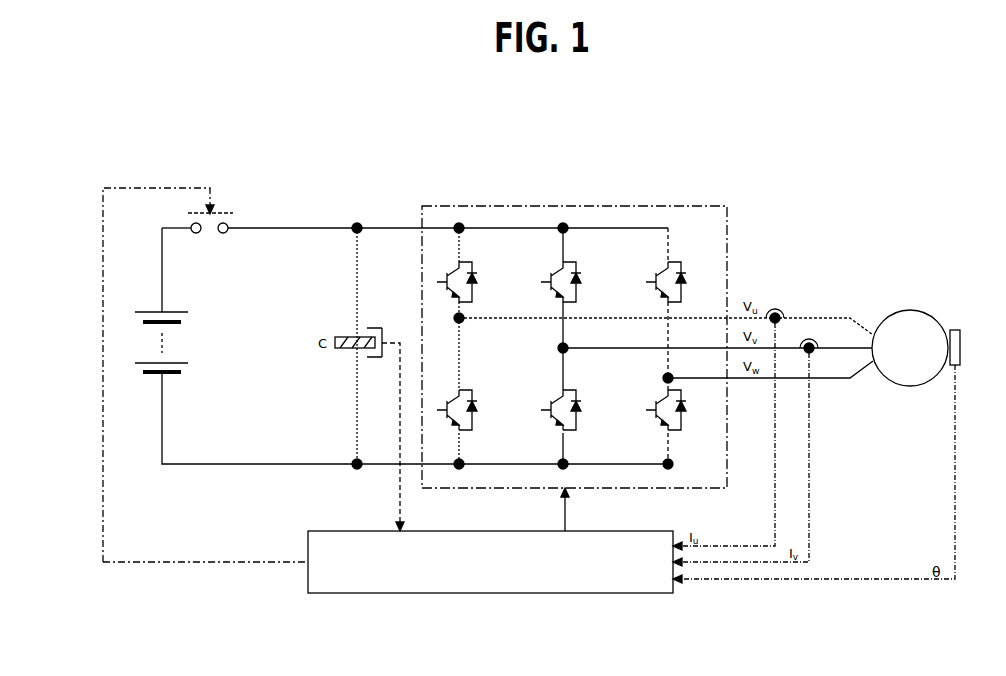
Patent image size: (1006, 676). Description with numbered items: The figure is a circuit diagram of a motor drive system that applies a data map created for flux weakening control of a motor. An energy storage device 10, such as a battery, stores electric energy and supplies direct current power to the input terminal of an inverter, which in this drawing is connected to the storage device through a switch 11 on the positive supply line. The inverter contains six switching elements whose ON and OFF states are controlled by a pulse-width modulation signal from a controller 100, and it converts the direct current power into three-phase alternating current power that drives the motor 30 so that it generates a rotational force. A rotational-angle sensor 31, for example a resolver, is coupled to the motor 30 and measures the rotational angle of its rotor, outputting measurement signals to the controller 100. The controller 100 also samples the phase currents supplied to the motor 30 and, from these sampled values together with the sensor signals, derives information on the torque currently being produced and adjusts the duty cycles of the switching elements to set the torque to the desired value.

The energy storage device 10 is at (150, 376).
The switch 11 is at (232, 221).
The motor 30 is at (574, 205).
The rotational-angle sensor 31 is at (955, 330).
The controller 100 is at (490, 594).